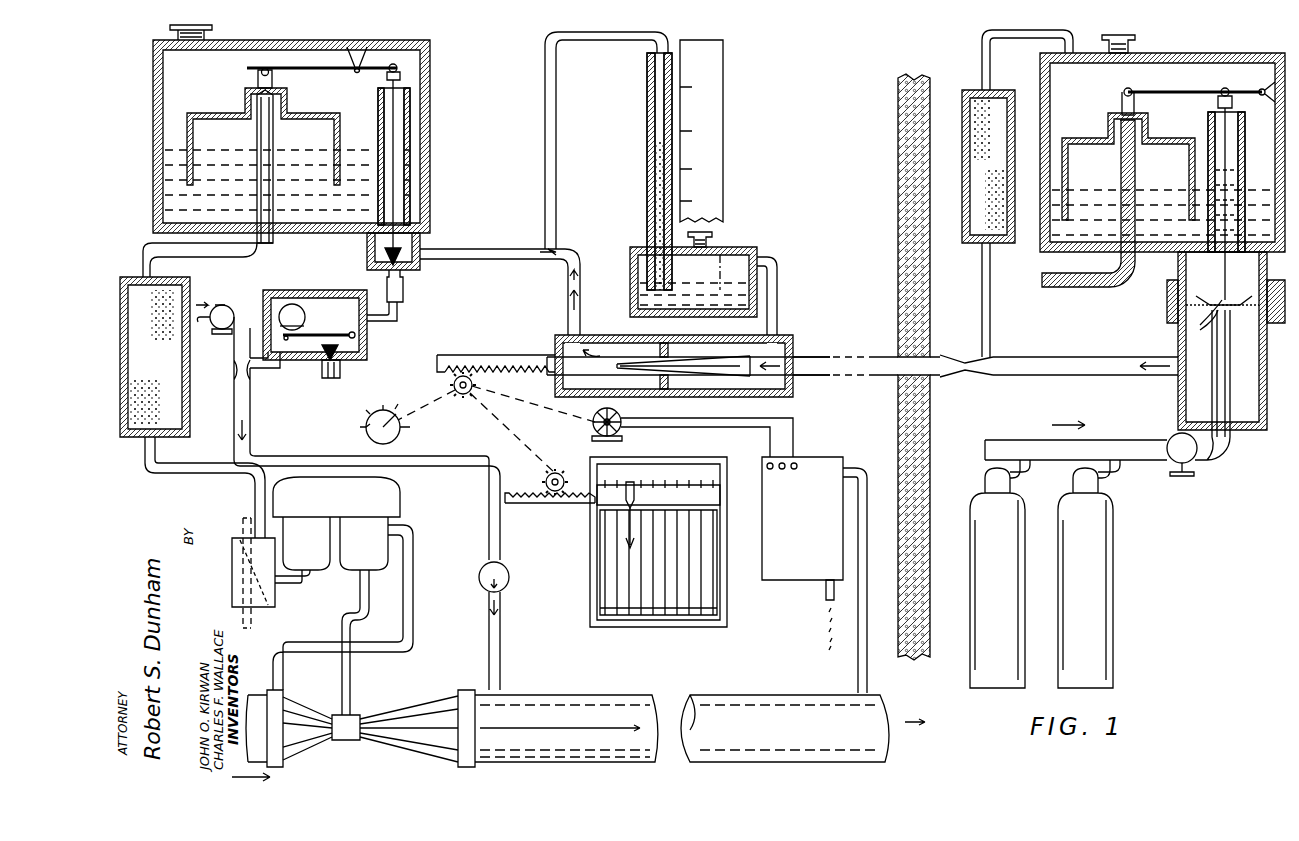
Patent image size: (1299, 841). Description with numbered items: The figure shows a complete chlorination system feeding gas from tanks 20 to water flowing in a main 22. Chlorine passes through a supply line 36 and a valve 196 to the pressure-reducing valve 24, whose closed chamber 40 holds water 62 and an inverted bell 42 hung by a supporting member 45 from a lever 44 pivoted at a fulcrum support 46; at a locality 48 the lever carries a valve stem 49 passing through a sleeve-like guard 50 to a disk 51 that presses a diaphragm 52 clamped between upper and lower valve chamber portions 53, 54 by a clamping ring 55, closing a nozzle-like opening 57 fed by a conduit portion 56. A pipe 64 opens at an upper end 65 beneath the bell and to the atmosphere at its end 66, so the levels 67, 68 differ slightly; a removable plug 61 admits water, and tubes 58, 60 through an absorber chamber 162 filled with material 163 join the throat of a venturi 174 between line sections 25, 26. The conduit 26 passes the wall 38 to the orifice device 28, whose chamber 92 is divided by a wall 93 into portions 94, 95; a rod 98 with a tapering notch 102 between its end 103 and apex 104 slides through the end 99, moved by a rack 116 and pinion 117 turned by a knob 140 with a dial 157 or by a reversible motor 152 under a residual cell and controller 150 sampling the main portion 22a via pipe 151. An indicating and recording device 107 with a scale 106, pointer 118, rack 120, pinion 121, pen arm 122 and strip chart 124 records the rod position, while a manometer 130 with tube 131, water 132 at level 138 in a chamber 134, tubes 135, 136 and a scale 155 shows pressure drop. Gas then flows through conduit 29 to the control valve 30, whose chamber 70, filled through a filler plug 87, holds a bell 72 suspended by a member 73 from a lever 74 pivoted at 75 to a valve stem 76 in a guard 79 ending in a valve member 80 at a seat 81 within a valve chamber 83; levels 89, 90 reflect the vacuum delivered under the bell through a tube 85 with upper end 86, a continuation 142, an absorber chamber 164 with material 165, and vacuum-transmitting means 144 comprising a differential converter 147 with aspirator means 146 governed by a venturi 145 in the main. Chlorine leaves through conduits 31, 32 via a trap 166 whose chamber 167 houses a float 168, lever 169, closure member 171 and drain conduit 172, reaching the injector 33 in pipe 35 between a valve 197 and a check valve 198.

The chlorine tanks 20 is at (1020, 586).
The water main 22 is at (572, 758).
The downstream portion of the main 22a is at (778, 758).
The pressure-reducing valve 24 is at (1163, 43).
The conduit 25 is at (1060, 376).
The conduit 26 is at (950, 376).
The adjustable orifice device 28 is at (712, 404).
The conduit 29 is at (568, 300).
The flow control valve 30 is at (396, 40).
The conduit 31 is at (392, 315).
The conduit 32 is at (268, 370).
The suction-type injector 33 is at (236, 375).
The pipe 35 is at (489, 527).
The supply line 36 is at (1127, 440).
The wall 38 is at (898, 151).
The closed chamber 40 is at (1275, 115).
The inverted bell 42 is at (1166, 138).
The lever 44 is at (1172, 90).
The supporting member 45 is at (1124, 106).
The fulcrum support 46 is at (1262, 88).
The pivot locality 48 is at (1225, 88).
The valve stem 49 is at (1245, 152).
The sleeve-like guard 50 is at (1245, 135).
The valve-operating disk 51 is at (1213, 290).
The flexible diaphragm 52 is at (1232, 316).
The upper valve chamber portion 53 is at (1180, 262).
The lower valve chamber portion 54 is at (1178, 397).
The clamping ring 55 is at (1168, 300).
The conduit portion 56 is at (1240, 410).
The nozzle-like opening 57 is at (1201, 323).
The tube 58 is at (982, 46).
The conduit 60 is at (982, 304).
The removable plug 61 is at (1113, 35).
The water 62 is at (1243, 240).
The pipe 64 is at (1120, 225).
The upper opening 65 is at (1120, 130).
The outer end 66 is at (1042, 288).
The water level 67 is at (1052, 175).
The water level 68 is at (1152, 190).
The chamber 70 is at (153, 89).
The inverted bell 72 is at (205, 112).
The suspending member 73 is at (258, 74).
The lever 74 is at (300, 68).
The pivot 75 is at (400, 68).
The valve stem 76 is at (398, 108).
The sleeve-like guard 79 is at (415, 155).
The valve member 80 is at (411, 257).
The valve seat 81 is at (403, 280).
The valve chamber 83 is at (375, 248).
The tube 85 is at (268, 248).
The upper end of tube 86 is at (262, 110).
The filler plug 87 is at (200, 25).
The water level 89 is at (177, 145).
The water level 90 is at (306, 163).
The elongated chamber 92 is at (688, 373).
The wall 93 is at (650, 338).
The upstream chamber portion 94 is at (790, 343).
The downstream chamber portion 95 is at (556, 350).
The rod 98 is at (600, 370).
The chamber end 99 is at (558, 388).
The tapering notch 102 is at (745, 370).
The rod end 103 is at (790, 390).
The notch apex 104 is at (620, 375).
The scale 106 is at (700, 475).
The indicating and recording device 107 is at (740, 507).
The rack 116 is at (470, 355).
The pinion 117 is at (460, 395).
The pointer 118 is at (638, 499).
The rack 120 is at (560, 505).
The pinion 121 is at (545, 482).
The pen arm 122 is at (628, 530).
The strip chart 124 is at (618, 591).
The manometer 130 is at (625, 211).
The transparent tube 131 is at (647, 112).
The water 132 is at (640, 295).
The closed chamber 134 is at (742, 245).
The tube 135 is at (778, 294).
The tube 136 is at (556, 82).
The water level 138 is at (640, 285).
The knob 140 is at (392, 410).
The continuation conduit 142 is at (158, 458).
The vacuum-transmitting means 144 is at (244, 504).
The venturi 145 is at (305, 758).
The aspirator means 146 is at (262, 599).
The differential converter 147 is at (343, 596).
The chlorine-sensitive cell and controller 150 is at (778, 575).
The pipe 151 is at (858, 665).
The reversible motor 152 is at (593, 428).
The scale 155 is at (723, 107).
The dial 157 is at (362, 404).
The wet chlorine absorber chamber 162 is at (964, 235).
The absorbing material 163 is at (975, 90).
The chlorine absorbing chamber 164 is at (182, 418).
The absorbing material 165 is at (168, 365).
The trap 166 is at (285, 292).
The closed chamber 167 is at (258, 300).
The float 168 is at (302, 306).
The lever 169 is at (322, 333).
The valve closure member 171 is at (348, 354).
The drain conduit 172 is at (340, 374).
The venturi 174 is at (982, 372).
The valve 196 is at (1196, 462).
The valve 197 is at (222, 305).
The check valve 198 is at (479, 587).